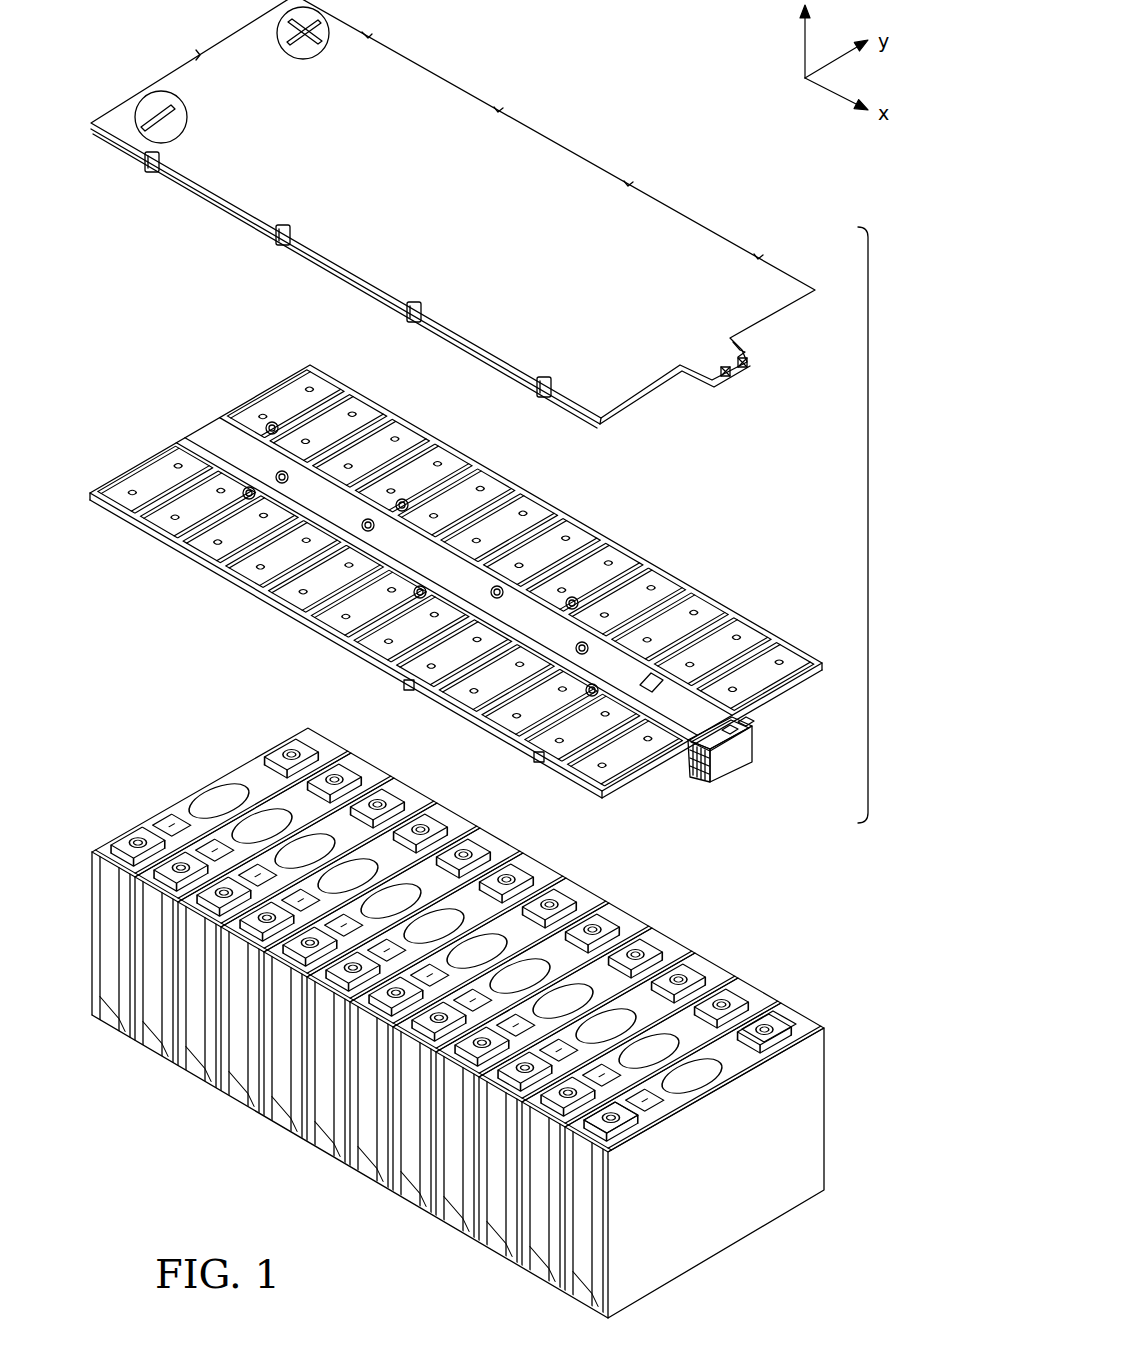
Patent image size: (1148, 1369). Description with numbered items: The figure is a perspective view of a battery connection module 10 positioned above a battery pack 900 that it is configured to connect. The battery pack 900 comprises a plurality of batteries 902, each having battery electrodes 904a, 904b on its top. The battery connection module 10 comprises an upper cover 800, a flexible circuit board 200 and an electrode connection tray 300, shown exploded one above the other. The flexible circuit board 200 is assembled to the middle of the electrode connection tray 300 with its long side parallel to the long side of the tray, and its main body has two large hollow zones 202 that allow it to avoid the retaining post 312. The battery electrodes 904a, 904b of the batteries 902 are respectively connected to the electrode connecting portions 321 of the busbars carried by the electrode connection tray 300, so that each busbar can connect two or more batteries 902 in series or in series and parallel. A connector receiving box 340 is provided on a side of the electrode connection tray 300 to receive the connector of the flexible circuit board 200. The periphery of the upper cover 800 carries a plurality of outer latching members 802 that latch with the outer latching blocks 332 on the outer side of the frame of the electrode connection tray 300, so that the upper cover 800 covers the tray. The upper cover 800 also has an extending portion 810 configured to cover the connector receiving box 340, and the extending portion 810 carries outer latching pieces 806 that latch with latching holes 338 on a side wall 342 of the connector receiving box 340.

The battery connection module 10 is at (868, 525).
The upper cover 800 is at (458, 220).
The outer latching members 802 is at (405, 314).
The outer latching pieces 806 is at (745, 367).
The extending portion 810 is at (742, 350).
The electrode connection tray 300 is at (474, 604).
The retaining post 312 is at (497, 585).
The electrode connecting portions 321 is at (778, 653).
The outer latching blocks 332 is at (410, 686).
The hollow zones 202 is at (307, 488).
The flexible circuit board 200 is at (632, 685).
The connector receiving box 340 is at (757, 727).
The latching holes 338 is at (753, 742).
The side wall 342 is at (718, 772).
The battery pack 900 is at (505, 1042).
The batteries 902 is at (540, 1273).
The battery electrode 904a is at (797, 1020).
The battery electrode 904b is at (612, 1128).